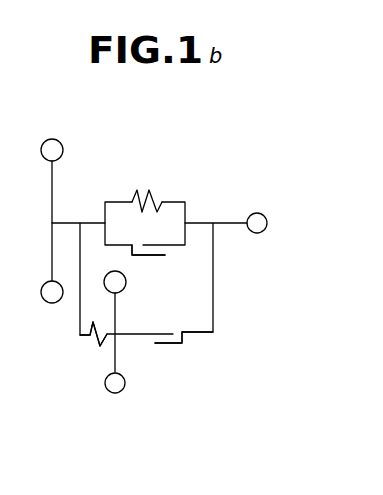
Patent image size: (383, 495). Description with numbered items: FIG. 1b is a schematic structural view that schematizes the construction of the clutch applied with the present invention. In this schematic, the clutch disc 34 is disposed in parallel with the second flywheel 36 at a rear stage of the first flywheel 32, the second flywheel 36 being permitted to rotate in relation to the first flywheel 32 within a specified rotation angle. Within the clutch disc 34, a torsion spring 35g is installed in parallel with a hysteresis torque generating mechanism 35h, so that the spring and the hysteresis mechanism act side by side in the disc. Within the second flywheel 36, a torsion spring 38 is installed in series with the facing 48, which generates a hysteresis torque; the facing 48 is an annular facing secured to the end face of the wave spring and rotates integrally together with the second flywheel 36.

The first flywheel 32 is at (52, 188).
The clutch disc 34 is at (170, 182).
The torsion spring 35g is at (133, 200).
The hysteresis torque generating mechanism 35h is at (157, 256).
The second flywheel 36 is at (112, 364).
The torsion spring 38 is at (97, 343).
The facing 48 is at (172, 343).